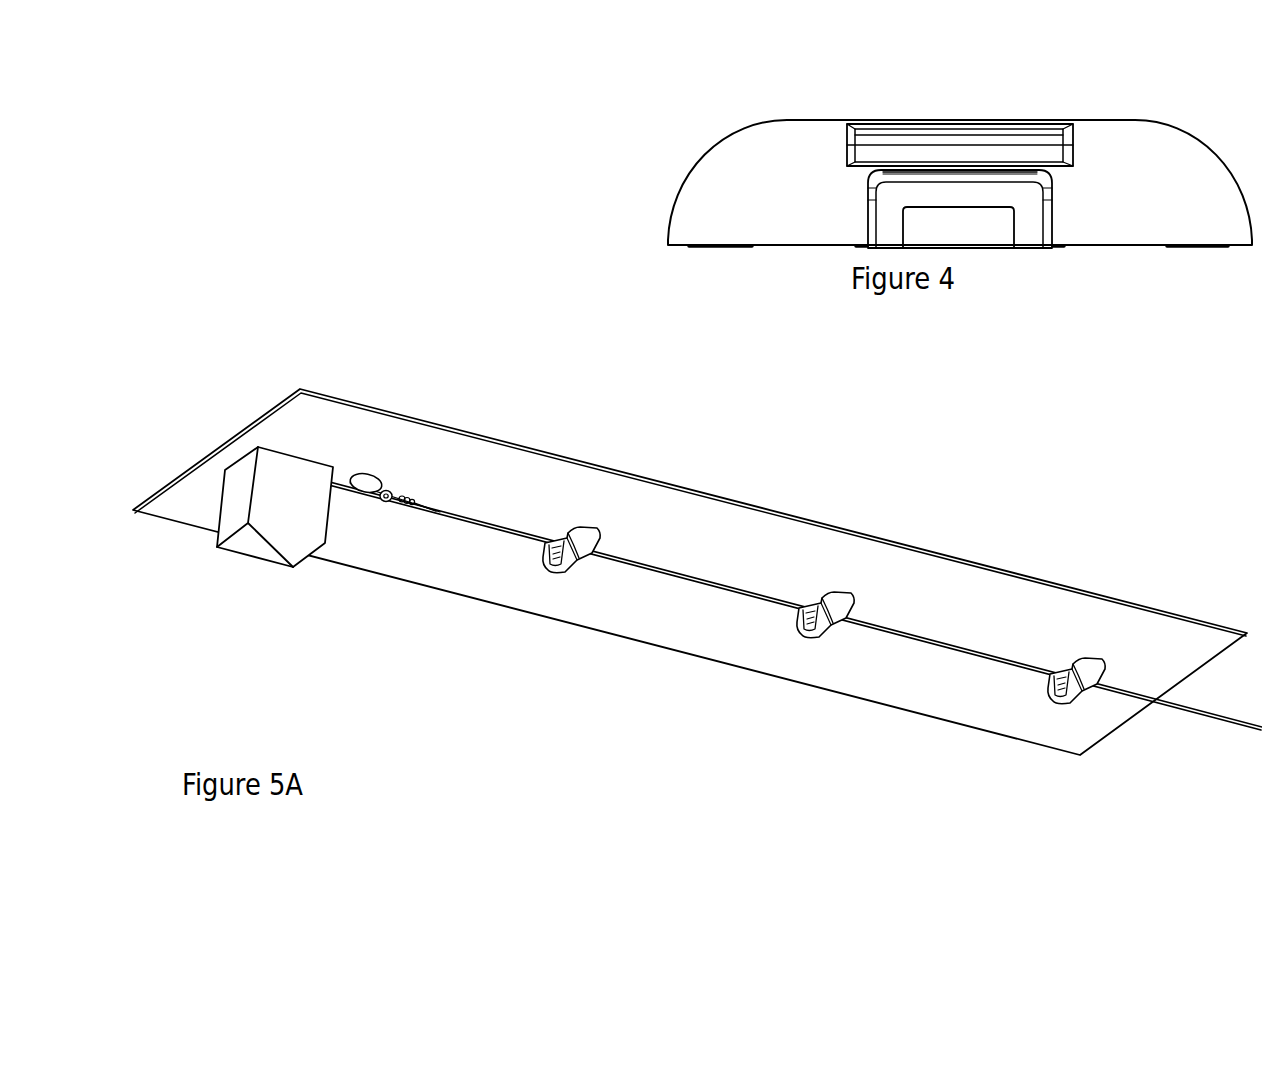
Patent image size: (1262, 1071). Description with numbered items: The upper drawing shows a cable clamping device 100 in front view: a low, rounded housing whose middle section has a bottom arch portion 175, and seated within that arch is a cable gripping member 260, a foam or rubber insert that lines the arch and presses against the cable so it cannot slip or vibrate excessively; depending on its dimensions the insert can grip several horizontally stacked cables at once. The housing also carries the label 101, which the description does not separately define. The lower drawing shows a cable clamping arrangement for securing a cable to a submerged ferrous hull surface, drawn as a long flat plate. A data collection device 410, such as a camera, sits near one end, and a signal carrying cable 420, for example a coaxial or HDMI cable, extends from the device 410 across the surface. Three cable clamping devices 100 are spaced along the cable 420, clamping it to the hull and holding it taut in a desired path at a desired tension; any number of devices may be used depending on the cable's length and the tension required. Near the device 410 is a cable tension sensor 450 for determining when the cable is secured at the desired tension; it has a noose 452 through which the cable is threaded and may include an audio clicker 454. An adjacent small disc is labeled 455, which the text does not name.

In FIG. 5A, the cable clamping device 100 is at (580, 555).
In FIG. 4, the housing 101 is at (980, 112).
In FIG. 4, the bottom arch portion 175 is at (1036, 174).
In FIG. 4, the cable gripping member 260 is at (1025, 242).
In FIG. 5A, the data collection device 410 is at (279, 503).
In FIG. 5A, the signal carrying cable 420 is at (715, 580).
In FIG. 5A, the cable tension sensor 450 is at (389, 480).
In FIG. 5A, the noose 452 is at (427, 507).
In FIG. 5A, the audio clicker 454 is at (385, 500).
In FIG. 5A, the cap 455 is at (367, 482).